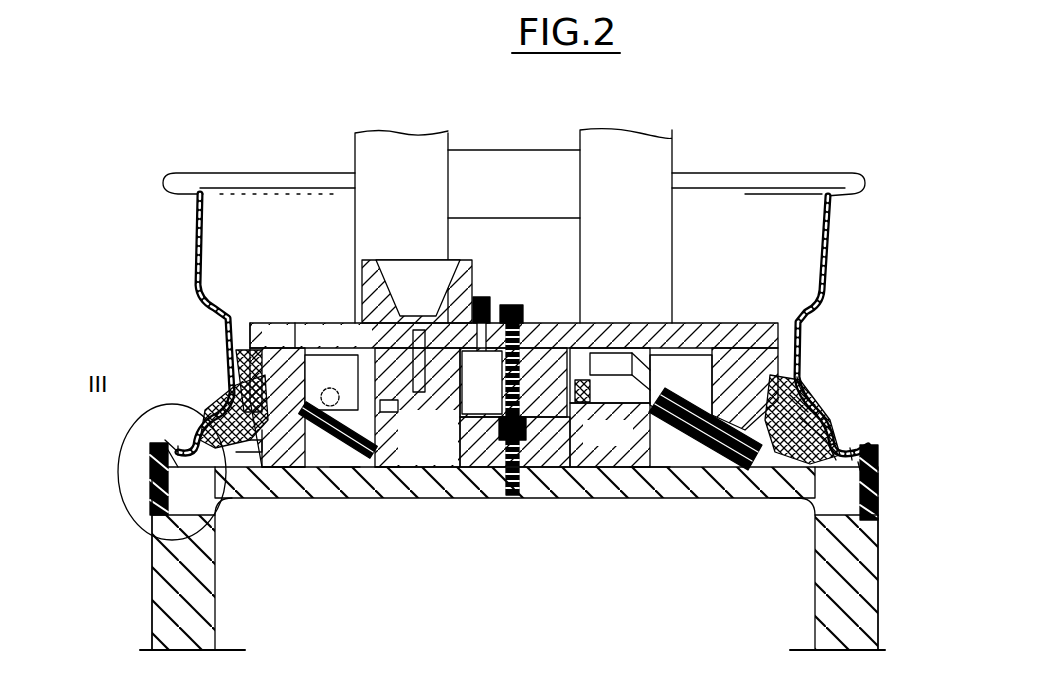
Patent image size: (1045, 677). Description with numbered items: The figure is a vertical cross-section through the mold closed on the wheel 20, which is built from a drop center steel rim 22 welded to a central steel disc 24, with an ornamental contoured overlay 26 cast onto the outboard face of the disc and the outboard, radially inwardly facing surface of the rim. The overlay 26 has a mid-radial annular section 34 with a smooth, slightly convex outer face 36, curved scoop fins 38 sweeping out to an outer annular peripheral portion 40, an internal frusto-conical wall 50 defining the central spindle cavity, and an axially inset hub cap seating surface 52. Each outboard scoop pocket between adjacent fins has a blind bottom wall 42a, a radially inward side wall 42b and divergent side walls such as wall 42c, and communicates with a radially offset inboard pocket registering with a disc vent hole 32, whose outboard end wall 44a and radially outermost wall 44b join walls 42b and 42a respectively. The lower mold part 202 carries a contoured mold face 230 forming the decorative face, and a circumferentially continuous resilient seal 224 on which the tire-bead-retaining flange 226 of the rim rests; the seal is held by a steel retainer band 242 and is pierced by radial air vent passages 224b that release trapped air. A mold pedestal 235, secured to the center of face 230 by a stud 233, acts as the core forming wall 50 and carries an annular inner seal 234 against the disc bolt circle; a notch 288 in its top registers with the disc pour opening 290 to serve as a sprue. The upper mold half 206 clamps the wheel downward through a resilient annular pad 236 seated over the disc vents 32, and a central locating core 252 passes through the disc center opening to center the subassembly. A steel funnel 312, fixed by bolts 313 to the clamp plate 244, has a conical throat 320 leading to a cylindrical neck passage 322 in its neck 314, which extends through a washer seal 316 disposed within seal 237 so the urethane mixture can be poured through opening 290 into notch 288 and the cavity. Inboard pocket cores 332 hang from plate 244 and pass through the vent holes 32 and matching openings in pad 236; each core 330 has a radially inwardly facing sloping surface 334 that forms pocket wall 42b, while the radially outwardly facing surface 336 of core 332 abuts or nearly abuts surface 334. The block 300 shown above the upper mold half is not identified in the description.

The wheel 20 is at (195, 213).
The drop center steel rim 22 is at (197, 262).
The central steel disc 24 is at (360, 388).
The ornamental overlay 26 is at (300, 470).
The vent holes 32 is at (720, 390).
The mid-radial annular section 34 is at (343, 462).
The outer face 36 is at (280, 470).
The scoop fins 38 is at (784, 500).
The outer annular peripheral portion 40 is at (848, 466).
The bottom wall 42a is at (215, 410).
The radially inward side wall 42b is at (240, 470).
The leading side wall 42c is at (275, 425).
The outboard end wall 44a is at (352, 430).
The radially outermost wall 44b is at (268, 362).
The frusto-conical wall 50 is at (385, 467).
The hub cap seating surface 52 is at (650, 472).
The lower mold part 202 is at (147, 614).
The upper mold half 206 is at (257, 318).
The resilient seal 224 is at (870, 456).
The air vent passages 224b is at (158, 480).
The tire-bead-retaining flange 226 is at (183, 444).
The mold face 230 is at (705, 472).
The stud 233 is at (499, 476).
The annular inner seal 234 is at (610, 435).
The mold pedestal 235 is at (515, 500).
The resilient annular pad 236 is at (700, 310).
The seal 237 is at (630, 352).
The retainer band 242 is at (876, 508).
The clamp plate 244 is at (303, 322).
The central locating core 252 is at (540, 322).
The notch 288 is at (417, 407).
The pour opening 290 is at (396, 406).
The press ram 300 is at (585, 130).
The steel funnel 312 is at (478, 296).
The bolts 313 is at (490, 303).
The neck 314 is at (513, 382).
The washer seal 316 is at (515, 419).
The conical throat portion 320 is at (372, 262).
The neck passage 322 is at (413, 320).
The core 330 is at (822, 424).
The inboard pocket cores 332 is at (750, 322).
The sloping surface 334 is at (812, 406).
The radially outwardly facing surface 336 is at (805, 382).